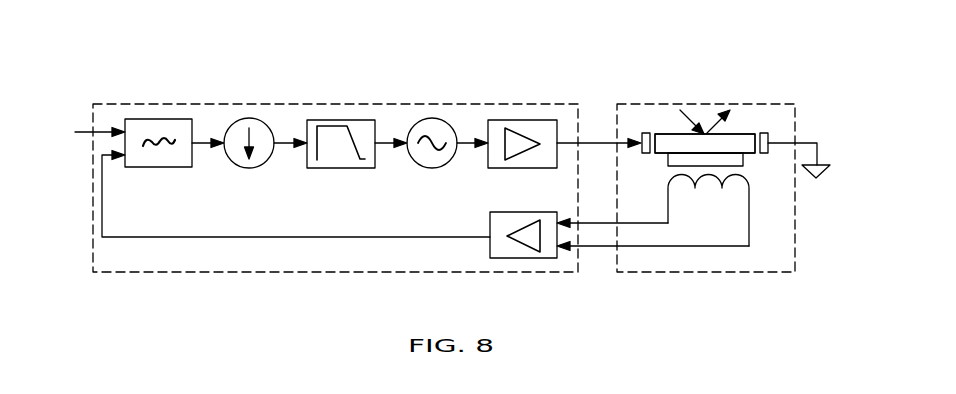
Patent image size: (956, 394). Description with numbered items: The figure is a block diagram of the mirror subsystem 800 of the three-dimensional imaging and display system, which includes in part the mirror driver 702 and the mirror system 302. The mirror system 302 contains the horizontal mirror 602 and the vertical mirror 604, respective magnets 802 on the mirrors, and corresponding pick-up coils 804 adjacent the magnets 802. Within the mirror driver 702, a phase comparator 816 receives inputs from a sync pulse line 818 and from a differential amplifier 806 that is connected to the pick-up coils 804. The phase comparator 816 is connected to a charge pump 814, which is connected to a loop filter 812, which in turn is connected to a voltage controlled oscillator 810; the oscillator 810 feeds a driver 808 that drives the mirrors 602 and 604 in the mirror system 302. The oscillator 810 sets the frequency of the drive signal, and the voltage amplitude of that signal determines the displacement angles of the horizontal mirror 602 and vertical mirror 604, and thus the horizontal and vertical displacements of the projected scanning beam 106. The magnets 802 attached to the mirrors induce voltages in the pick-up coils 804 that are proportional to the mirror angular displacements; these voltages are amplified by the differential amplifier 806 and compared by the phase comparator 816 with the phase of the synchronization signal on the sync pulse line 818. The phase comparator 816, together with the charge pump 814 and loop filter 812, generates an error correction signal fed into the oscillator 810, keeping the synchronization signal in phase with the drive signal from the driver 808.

The mirror subsystem 800 is at (152, 47).
The mirror driver 702 is at (147, 103).
The sync pulse line 818 is at (86, 134).
The phase comparator 816 is at (148, 124).
The charge pump 814 is at (248, 122).
The loop filter 812 is at (341, 124).
The voltage controlled oscillator 810 is at (432, 120).
The driver 808 is at (527, 124).
The differential amplifier 806 is at (525, 256).
The projected scanning beam 106 is at (683, 112).
The horizontal mirror 602 is at (735, 140).
The vertical mirror 604 is at (705, 143).
The mirror system 302 is at (798, 141).
The magnets 802 is at (732, 158).
The pick-up coils 804 is at (742, 187).